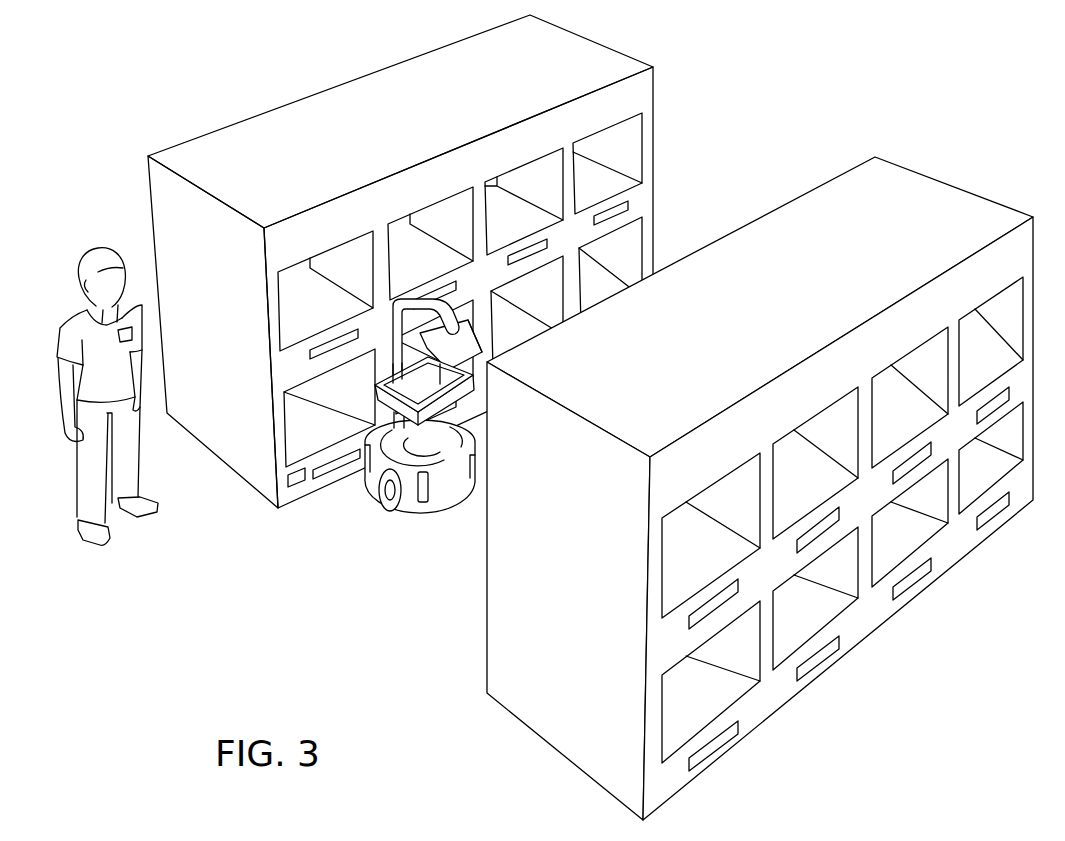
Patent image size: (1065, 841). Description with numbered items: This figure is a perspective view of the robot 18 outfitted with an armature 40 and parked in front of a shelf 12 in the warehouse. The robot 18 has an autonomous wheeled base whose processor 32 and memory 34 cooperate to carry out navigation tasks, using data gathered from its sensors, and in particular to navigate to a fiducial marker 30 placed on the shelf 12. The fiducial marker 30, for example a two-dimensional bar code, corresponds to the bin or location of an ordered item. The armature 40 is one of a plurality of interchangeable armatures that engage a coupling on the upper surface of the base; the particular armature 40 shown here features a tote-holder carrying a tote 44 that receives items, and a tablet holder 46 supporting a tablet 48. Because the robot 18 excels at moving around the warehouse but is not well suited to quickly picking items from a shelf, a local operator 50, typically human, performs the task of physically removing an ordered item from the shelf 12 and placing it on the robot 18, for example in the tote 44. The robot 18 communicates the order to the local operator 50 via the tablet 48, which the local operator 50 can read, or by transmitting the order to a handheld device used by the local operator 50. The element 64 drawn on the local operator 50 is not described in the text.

The shelf 12 is at (242, 120).
The robot 18 is at (436, 429).
The fiducial marker 30 is at (300, 466).
The processor 32 is at (443, 491).
The memory 34 is at (382, 466).
The armature 40 is at (393, 323).
The tote 44 is at (449, 402).
The tablet holder 46 is at (487, 344).
The tablet 48 is at (473, 334).
The local operator 50 is at (114, 397).
The badge 64 is at (129, 339).